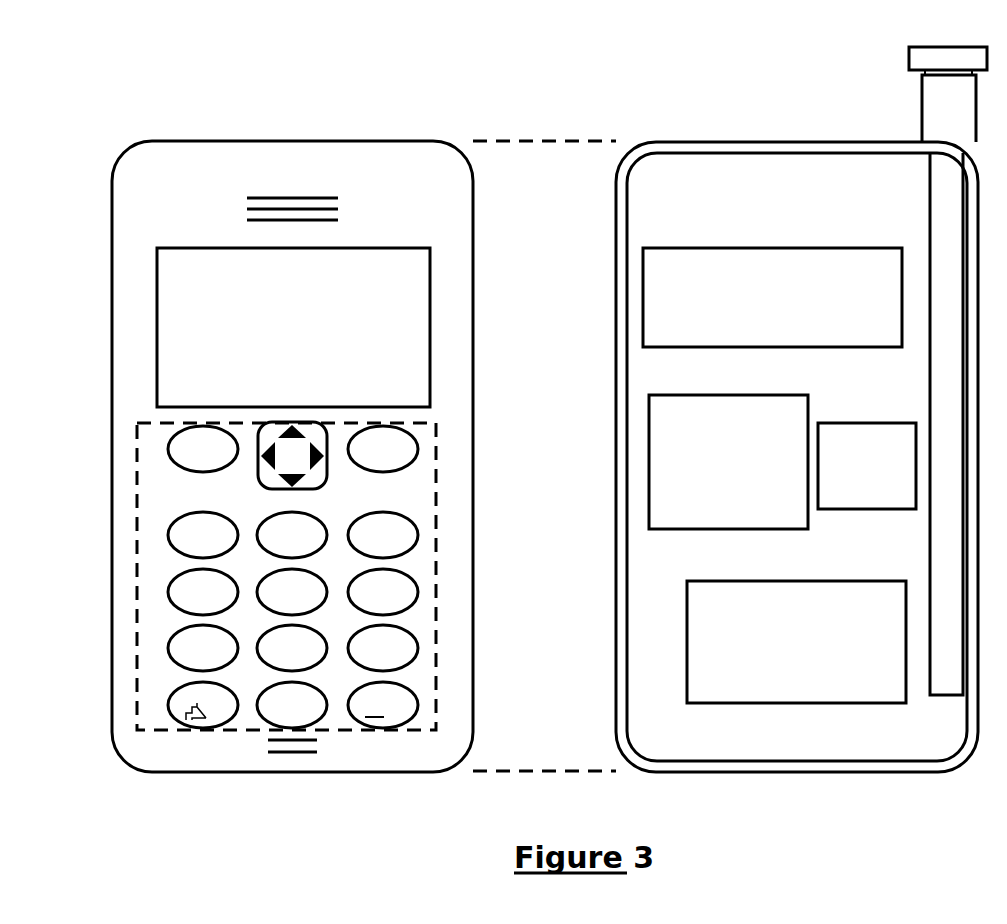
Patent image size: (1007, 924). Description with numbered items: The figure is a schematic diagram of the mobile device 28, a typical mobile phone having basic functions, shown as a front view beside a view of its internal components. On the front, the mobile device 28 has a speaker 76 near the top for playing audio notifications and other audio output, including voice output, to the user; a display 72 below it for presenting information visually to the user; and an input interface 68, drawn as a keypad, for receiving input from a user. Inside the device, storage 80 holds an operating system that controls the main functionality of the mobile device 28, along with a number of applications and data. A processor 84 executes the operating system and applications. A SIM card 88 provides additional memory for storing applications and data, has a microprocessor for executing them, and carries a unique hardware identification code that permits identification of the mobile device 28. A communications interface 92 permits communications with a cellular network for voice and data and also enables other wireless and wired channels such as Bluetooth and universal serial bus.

The mobile device 28 is at (96, 135).
The speaker 76 is at (280, 170).
The display 72 is at (200, 342).
The input interface 68 is at (137, 570).
The storage 80 is at (762, 321).
The processor 84 is at (717, 484).
The SIM card 88 is at (855, 500).
The communications interface 92 is at (785, 675).